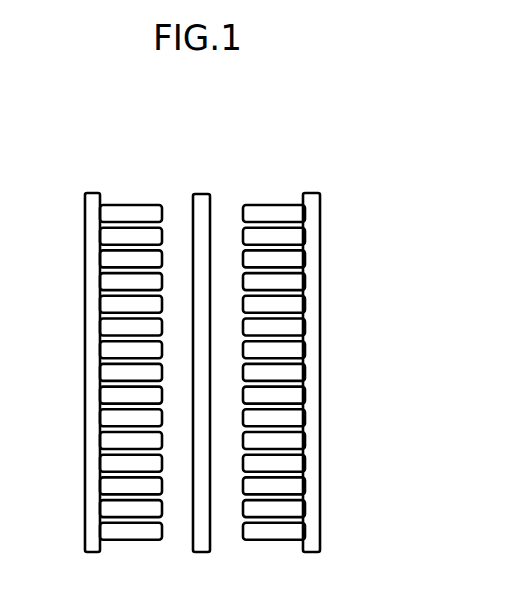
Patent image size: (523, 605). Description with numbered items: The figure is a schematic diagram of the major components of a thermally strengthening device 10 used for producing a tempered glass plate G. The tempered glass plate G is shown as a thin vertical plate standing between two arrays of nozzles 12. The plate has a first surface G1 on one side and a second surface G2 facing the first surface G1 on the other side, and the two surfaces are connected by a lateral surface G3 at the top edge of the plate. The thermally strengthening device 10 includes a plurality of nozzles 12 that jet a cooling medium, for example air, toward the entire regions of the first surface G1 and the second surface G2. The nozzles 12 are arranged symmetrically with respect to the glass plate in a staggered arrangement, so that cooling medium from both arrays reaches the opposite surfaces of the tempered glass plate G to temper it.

The thermally strengthening device 10 is at (322, 184).
The nozzles 12 is at (107, 303).
The tempered glass plate G is at (226, 176).
The first surface G1 is at (193, 206).
The second surface G2 is at (211, 207).
The lateral surface G3 is at (199, 193).